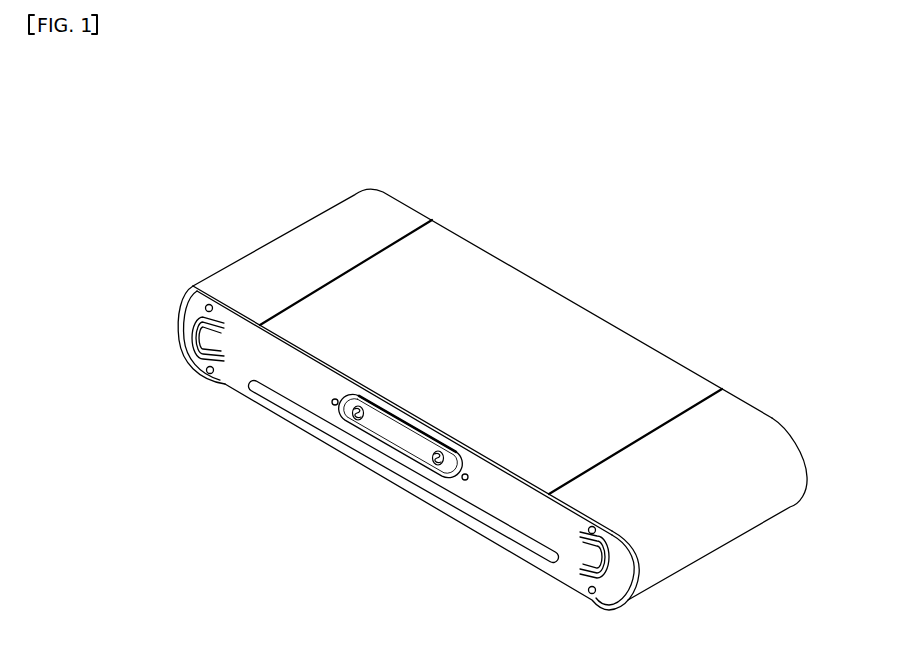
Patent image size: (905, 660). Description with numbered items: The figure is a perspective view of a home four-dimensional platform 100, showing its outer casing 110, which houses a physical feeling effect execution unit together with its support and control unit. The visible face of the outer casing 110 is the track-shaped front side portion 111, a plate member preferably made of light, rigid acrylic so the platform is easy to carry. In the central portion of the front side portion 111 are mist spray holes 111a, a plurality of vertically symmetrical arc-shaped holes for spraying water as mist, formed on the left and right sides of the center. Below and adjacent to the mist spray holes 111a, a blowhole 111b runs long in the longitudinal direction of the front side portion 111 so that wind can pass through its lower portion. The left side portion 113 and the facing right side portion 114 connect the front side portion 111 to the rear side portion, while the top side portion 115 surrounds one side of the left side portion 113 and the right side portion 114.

The home 4D platform 100 is at (130, 88).
The outer casing 110 is at (176, 311).
The front side portion 111 is at (237, 375).
The mist spray hole 111a is at (433, 470).
The blowhole 111b is at (313, 420).
The left side portion 113 is at (260, 272).
The right side portion 114 is at (728, 443).
The top side portion 115 is at (503, 290).